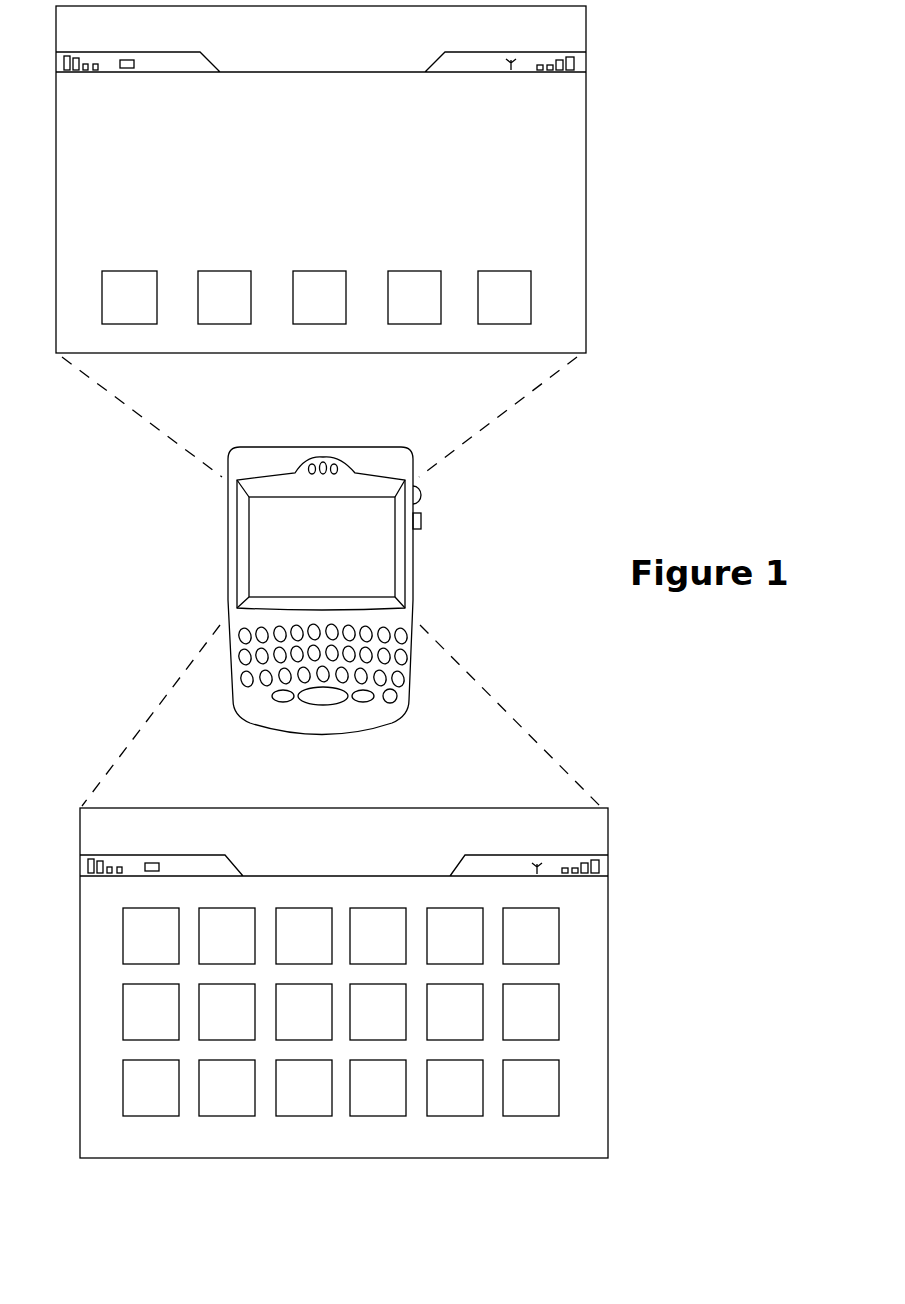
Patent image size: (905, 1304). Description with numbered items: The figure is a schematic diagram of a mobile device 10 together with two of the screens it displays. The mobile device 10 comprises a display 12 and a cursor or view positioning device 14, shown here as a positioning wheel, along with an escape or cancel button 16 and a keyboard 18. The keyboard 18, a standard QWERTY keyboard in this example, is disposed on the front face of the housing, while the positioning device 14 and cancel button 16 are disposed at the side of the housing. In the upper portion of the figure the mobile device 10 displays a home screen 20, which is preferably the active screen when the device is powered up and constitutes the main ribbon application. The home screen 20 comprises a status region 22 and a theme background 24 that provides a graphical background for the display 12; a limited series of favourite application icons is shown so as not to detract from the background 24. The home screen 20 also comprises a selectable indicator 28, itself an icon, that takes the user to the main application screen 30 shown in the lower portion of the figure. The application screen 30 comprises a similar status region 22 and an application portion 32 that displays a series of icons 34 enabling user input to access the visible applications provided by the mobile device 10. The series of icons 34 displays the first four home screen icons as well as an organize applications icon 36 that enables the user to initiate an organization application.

The mobile device 10 is at (181, 544).
The display 12 is at (300, 542).
The cursor or view positioning device 14 is at (427, 497).
The escape or cancel button 16 is at (424, 521).
The keyboard 18 is at (333, 717).
The home screen 20 is at (586, 106).
The status region 22 is at (486, 45).
The theme background 24 is at (318, 131).
The selectable indicator 28 is at (503, 271).
The main application screen 30 is at (608, 900).
The application portion 32 is at (99, 1146).
The series of icons 34 is at (563, 888).
The organize applications icon 36 is at (125, 996).